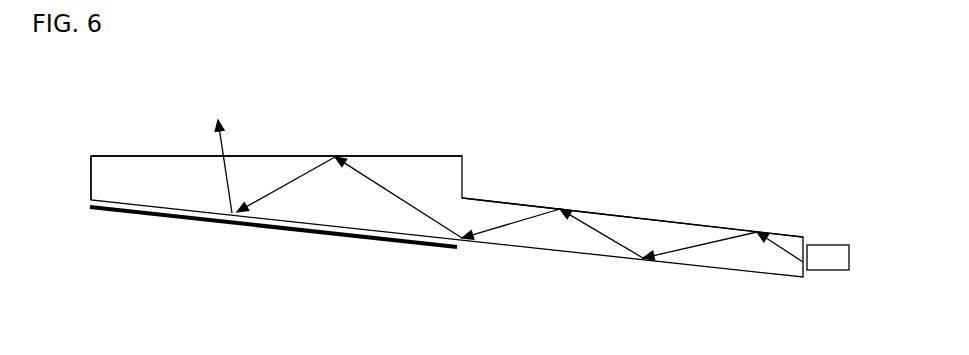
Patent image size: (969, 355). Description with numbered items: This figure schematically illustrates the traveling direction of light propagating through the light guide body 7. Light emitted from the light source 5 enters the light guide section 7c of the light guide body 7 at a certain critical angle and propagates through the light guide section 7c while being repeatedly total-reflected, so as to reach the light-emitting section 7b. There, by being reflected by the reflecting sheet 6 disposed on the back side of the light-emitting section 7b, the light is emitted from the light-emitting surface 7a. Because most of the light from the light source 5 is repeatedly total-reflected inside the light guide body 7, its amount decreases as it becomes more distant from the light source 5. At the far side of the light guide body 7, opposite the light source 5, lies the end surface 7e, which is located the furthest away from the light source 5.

The light guide body 7 is at (453, 173).
The light-emitting surface 7a is at (392, 153).
The light-emitting section 7b is at (260, 168).
The light guide section 7c is at (665, 230).
The end surface 7e is at (83, 197).
The reflecting sheet 6 is at (368, 240).
The light source 5 is at (830, 267).